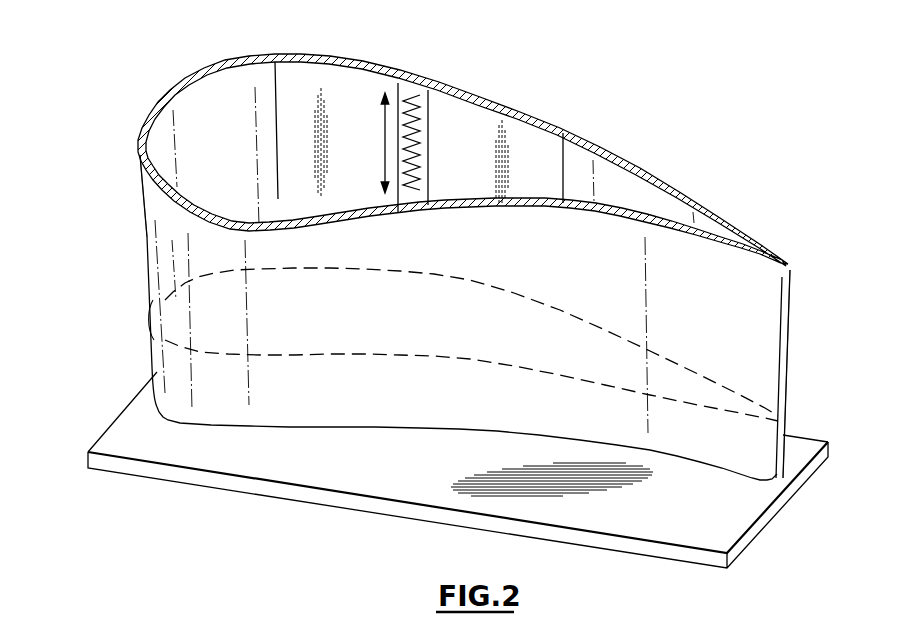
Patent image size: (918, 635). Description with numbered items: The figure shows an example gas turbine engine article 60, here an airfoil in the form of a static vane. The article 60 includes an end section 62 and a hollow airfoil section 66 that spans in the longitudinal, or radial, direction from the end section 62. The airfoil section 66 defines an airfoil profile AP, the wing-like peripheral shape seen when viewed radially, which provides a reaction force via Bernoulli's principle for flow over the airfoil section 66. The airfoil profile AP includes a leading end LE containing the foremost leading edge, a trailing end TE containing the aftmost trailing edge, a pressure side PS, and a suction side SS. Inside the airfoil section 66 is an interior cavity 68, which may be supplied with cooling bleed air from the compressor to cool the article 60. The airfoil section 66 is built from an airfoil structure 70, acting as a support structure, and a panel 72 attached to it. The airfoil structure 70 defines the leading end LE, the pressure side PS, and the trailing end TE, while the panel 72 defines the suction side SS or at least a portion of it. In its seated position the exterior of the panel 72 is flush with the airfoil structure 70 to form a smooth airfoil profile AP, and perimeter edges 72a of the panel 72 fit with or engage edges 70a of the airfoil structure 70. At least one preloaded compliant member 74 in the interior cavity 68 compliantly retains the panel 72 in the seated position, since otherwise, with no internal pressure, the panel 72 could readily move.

The gas turbine engine article 60 is at (206, 556).
The end section 62 is at (630, 522).
The airfoil section 66 is at (165, 333).
The interior cavity 68 is at (247, 80).
The airfoil structure 70 is at (162, 250).
The edges of the airfoil structure 70a is at (288, 106).
The panel 72 is at (480, 85).
The perimeter edges 72a is at (270, 139).
The preloaded compliant member 74 is at (440, 150).
The leading end LE is at (135, 310).
The trailing end TE is at (756, 435).
The suction side SS is at (480, 272).
The pressure side PS is at (484, 372).
The airfoil profile AP is at (688, 363).